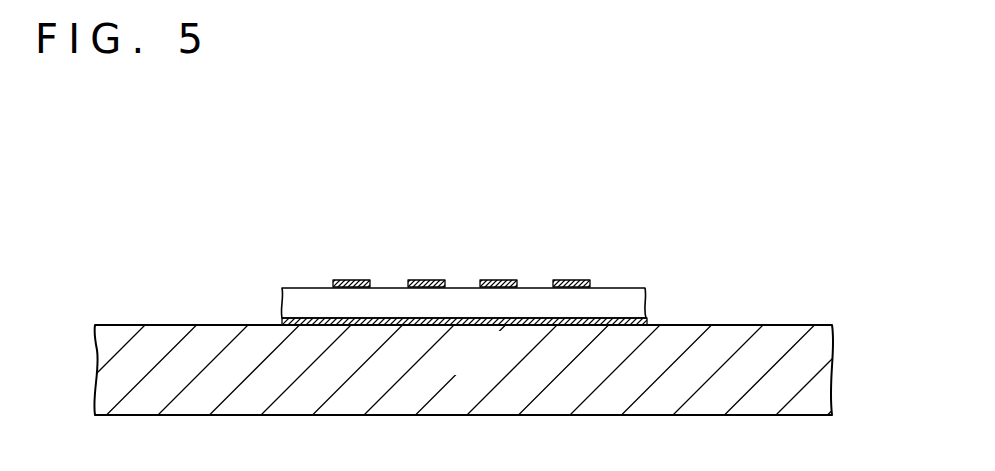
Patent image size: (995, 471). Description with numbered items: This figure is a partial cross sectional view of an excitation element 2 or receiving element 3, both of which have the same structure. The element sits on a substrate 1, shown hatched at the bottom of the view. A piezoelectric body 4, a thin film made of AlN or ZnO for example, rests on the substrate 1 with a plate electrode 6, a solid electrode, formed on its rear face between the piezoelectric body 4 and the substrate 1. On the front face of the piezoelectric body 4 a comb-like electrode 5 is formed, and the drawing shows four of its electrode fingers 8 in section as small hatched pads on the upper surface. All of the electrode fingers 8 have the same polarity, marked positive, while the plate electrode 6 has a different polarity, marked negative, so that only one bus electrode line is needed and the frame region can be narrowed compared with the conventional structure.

The substrate 1 is at (783, 324).
The excitation element 2 is at (697, 249).
The receiving element 3 is at (837, 194).
The piezoelectric body 4 is at (618, 288).
The comb-like electrode 5 is at (330, 279).
The plate electrode 6 is at (605, 326).
The electrode fingers 8 is at (445, 283).